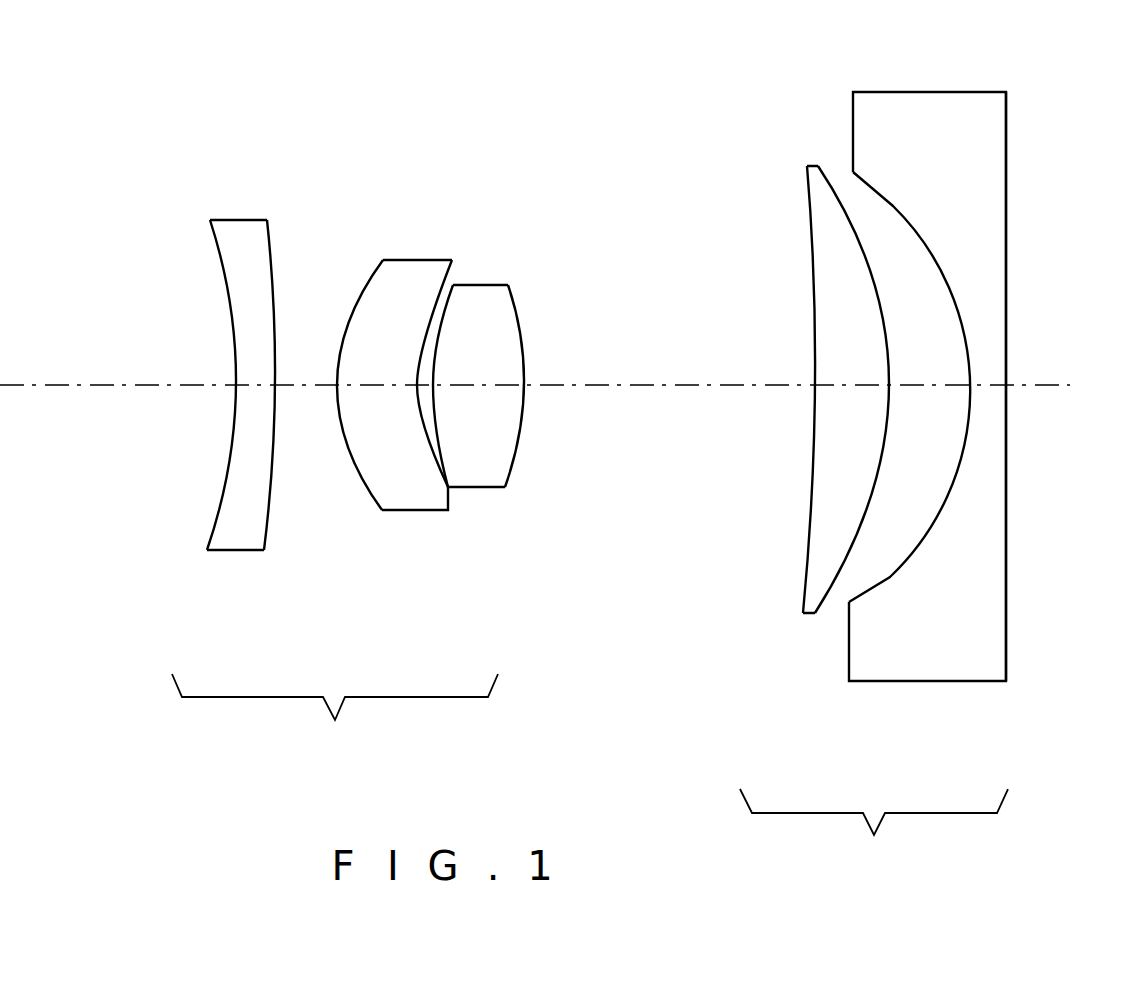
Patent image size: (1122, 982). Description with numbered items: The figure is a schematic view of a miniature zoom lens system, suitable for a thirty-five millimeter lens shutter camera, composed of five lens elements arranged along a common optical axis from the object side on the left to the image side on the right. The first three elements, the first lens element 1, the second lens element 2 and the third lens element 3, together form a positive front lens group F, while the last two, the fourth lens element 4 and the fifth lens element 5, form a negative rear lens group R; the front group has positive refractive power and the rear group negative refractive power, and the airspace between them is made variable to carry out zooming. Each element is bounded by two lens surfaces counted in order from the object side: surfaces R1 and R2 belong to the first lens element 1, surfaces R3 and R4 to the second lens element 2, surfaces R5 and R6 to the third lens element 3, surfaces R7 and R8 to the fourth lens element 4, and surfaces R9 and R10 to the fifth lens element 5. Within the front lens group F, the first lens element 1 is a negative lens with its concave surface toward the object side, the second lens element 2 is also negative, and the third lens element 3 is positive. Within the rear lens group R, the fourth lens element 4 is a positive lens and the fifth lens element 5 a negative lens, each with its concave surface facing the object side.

The first lens element 1 is at (232, 402).
The second lens element 2 is at (383, 408).
The third lens element 3 is at (514, 400).
The fourth lens element 4 is at (796, 364).
The fifth lens element 5 is at (928, 418).
The front lens group F is at (364, 460).
The rear lens group R is at (902, 462).
The lens surface R1 is at (230, 303).
The lens surface R2 is at (270, 255).
The lens surface R3 is at (352, 312).
The lens surface R4 is at (420, 362).
The lens surface R5 is at (453, 282).
The lens surface R6 is at (517, 312).
The lens surface R7 is at (810, 260).
The lens surface R8 is at (840, 187).
The lens surface R9 is at (890, 205).
The lens surface R10 is at (1006, 148).